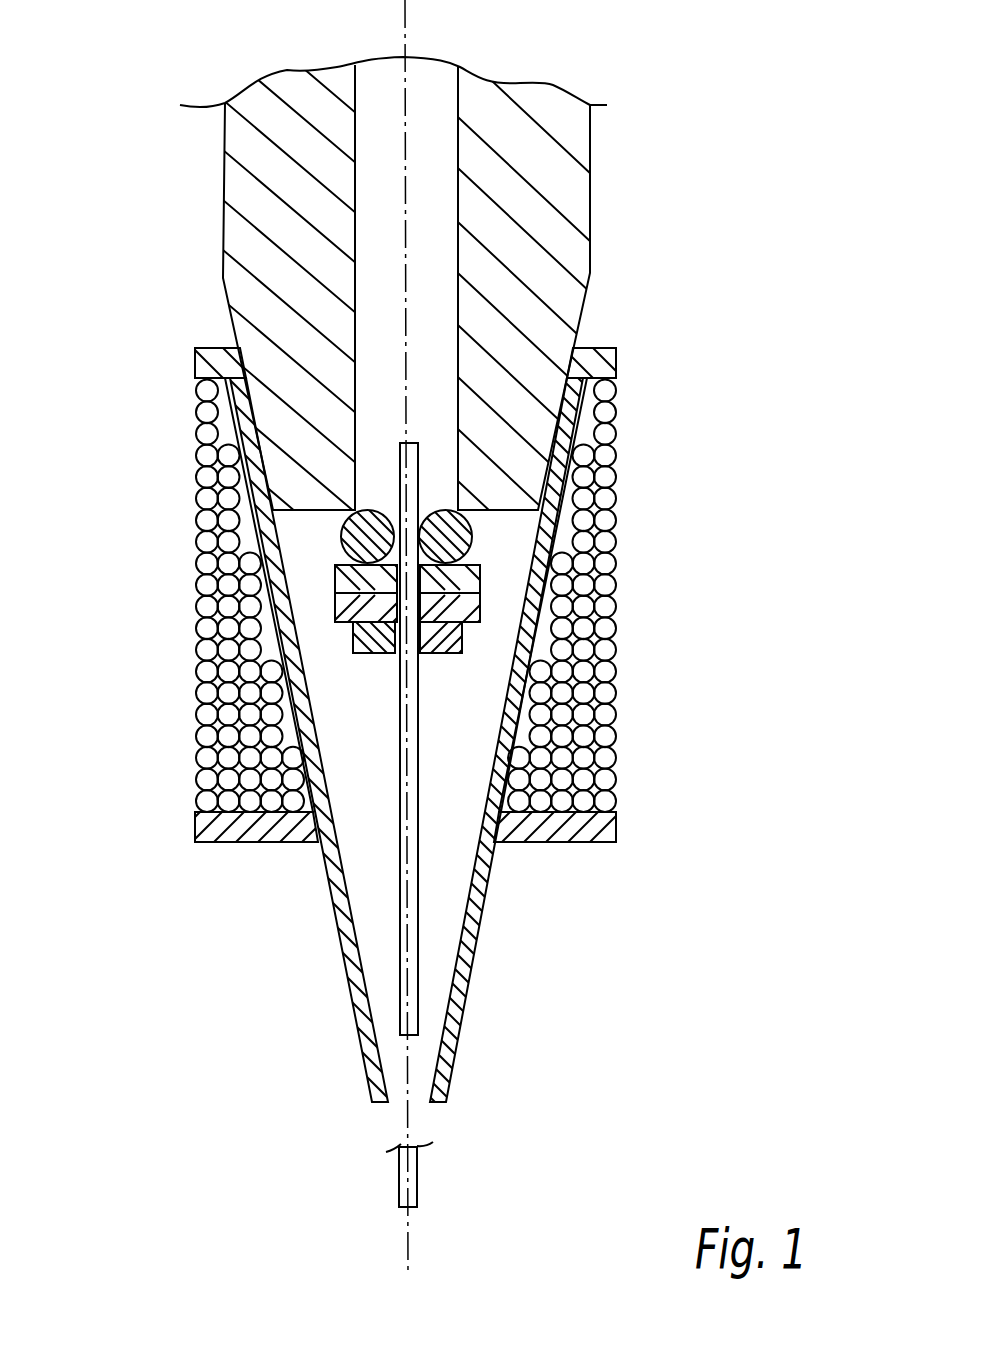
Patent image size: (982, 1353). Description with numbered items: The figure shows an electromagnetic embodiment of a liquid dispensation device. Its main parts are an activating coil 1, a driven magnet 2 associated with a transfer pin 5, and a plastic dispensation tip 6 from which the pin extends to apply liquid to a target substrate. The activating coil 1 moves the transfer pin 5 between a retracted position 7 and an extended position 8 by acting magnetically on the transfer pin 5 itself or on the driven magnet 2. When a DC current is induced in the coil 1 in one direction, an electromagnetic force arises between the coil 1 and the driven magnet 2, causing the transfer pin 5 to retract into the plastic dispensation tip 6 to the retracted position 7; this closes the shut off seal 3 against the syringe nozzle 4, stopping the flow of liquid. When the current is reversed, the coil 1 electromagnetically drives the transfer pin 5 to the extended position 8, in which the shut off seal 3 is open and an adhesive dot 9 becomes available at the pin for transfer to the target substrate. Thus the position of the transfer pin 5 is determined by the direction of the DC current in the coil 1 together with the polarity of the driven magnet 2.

The activating coil 1 is at (195, 558).
The driven magnet 2 is at (337, 552).
The shut off seal 3 is at (467, 507).
The syringe nozzle 4 is at (558, 127).
The transfer pin 5 is at (348, 643).
The plastic dispensation tip 6 is at (484, 951).
The retracted position 7 is at (421, 1015).
The extended position 8 is at (421, 1183).
The adhesive dot 9 is at (412, 1208).